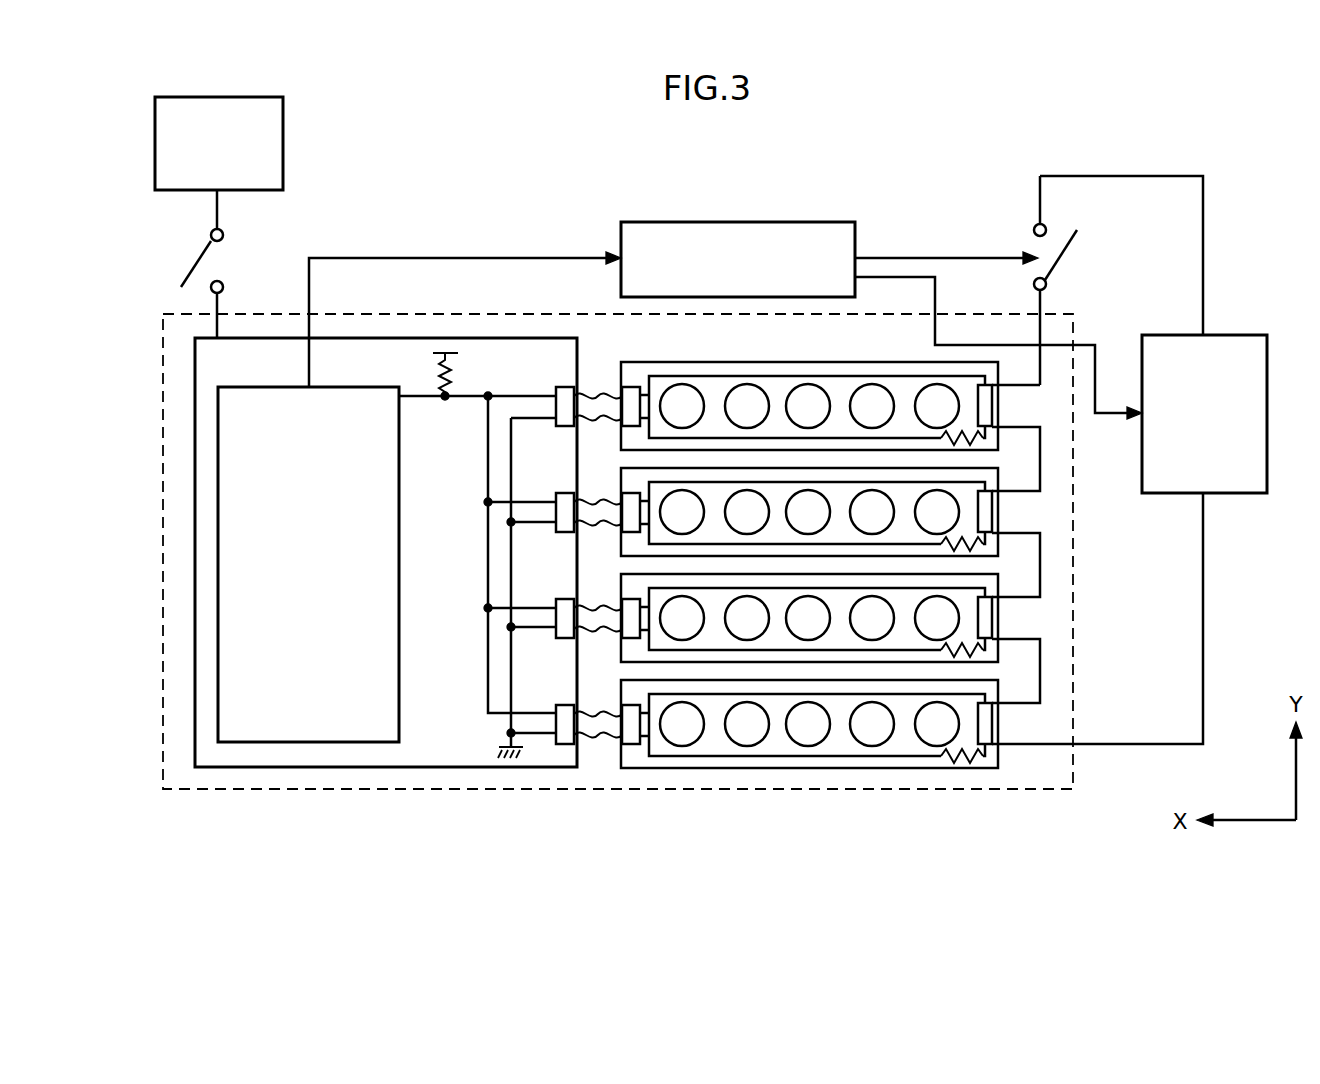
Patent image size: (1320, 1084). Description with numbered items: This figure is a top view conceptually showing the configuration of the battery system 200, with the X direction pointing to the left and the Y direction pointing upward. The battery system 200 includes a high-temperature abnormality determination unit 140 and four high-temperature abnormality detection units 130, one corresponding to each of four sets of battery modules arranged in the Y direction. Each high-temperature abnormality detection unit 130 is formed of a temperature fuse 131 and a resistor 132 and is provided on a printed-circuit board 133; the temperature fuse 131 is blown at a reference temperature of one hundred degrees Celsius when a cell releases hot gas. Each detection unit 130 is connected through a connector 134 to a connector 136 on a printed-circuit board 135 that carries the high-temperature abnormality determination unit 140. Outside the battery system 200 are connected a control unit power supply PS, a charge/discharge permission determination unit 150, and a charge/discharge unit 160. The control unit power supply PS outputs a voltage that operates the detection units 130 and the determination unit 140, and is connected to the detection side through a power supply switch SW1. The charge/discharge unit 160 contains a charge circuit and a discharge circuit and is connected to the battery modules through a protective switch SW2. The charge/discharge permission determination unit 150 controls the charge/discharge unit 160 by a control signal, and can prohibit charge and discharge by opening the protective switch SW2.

The control unit power supply PS is at (284, 150).
The power supply switch SW1 is at (196, 259).
The protective switch SW2 is at (1062, 258).
The battery system 200 is at (162, 358).
The high-temperature abnormality detection unit 130 is at (984, 630).
The temperature fuse 131 is at (990, 745).
The resistor 132 is at (953, 633).
The printed-circuit board 133 is at (740, 768).
The connector 134 is at (632, 745).
The printed-circuit board 135 is at (445, 767).
The connector 136 is at (567, 744).
The high-temperature abnormality determination unit 140 is at (252, 742).
The charge/discharge permission determination unit 150 is at (713, 222).
The charge/discharge unit 160 is at (1258, 335).